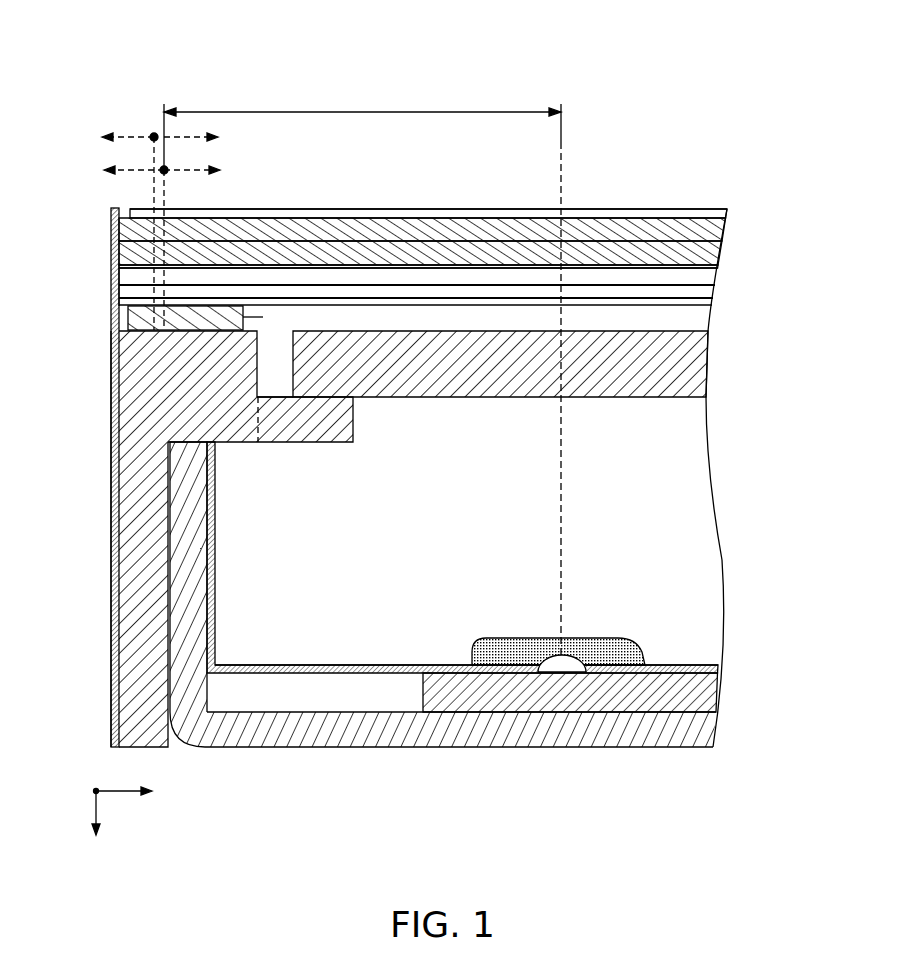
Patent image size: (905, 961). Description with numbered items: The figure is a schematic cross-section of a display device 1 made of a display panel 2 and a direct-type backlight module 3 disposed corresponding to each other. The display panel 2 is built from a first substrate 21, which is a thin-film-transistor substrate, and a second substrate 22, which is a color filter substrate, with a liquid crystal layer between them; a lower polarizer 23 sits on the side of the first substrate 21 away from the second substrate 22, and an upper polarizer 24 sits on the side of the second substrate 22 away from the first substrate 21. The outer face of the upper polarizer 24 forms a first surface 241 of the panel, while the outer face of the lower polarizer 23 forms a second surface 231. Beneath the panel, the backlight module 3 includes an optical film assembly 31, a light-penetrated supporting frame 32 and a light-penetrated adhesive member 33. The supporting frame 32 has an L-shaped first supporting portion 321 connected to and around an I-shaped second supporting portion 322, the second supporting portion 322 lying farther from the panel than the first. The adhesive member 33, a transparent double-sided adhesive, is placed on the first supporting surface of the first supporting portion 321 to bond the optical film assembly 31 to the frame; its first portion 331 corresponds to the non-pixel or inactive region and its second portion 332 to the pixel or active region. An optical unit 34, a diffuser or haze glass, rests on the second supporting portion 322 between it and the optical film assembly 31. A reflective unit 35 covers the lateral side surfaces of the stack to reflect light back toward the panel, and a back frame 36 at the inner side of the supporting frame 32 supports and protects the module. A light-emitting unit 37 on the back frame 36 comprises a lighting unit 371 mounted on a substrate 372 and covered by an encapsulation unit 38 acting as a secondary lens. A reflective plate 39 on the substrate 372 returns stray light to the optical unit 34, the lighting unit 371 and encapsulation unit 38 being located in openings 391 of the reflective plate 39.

The display device 1 is at (163, 42).
The display panel 2 is at (773, 178).
The backlight module 3 is at (63, 273).
The first substrate 21 is at (712, 252).
The second substrate 22 is at (717, 228).
The polarizer 23 is at (703, 265).
The polarizer 24 is at (712, 216).
The second surface 231 is at (700, 268).
The first surface 241 is at (675, 210).
The optical film assembly 31 is at (100, 275).
The supporting frame 32 is at (330, 487).
The first supporting portion 321 is at (236, 428).
The second supporting portion 322 is at (299, 422).
The light-penetrated adhesive member 33 is at (65, 323).
The first portion 331 is at (142, 322).
The second portion 332 is at (152, 360).
The optical unit 34 is at (630, 385).
The reflective unit 35 is at (112, 558).
The back frame 36 is at (705, 718).
The light-emitting unit 37 is at (673, 606).
The lighting unit 371 is at (572, 667).
The substrate 372 is at (620, 672).
The encapsulation unit 38 is at (508, 645).
The reflective plate 39 is at (712, 665).
The openings 391 is at (472, 663).